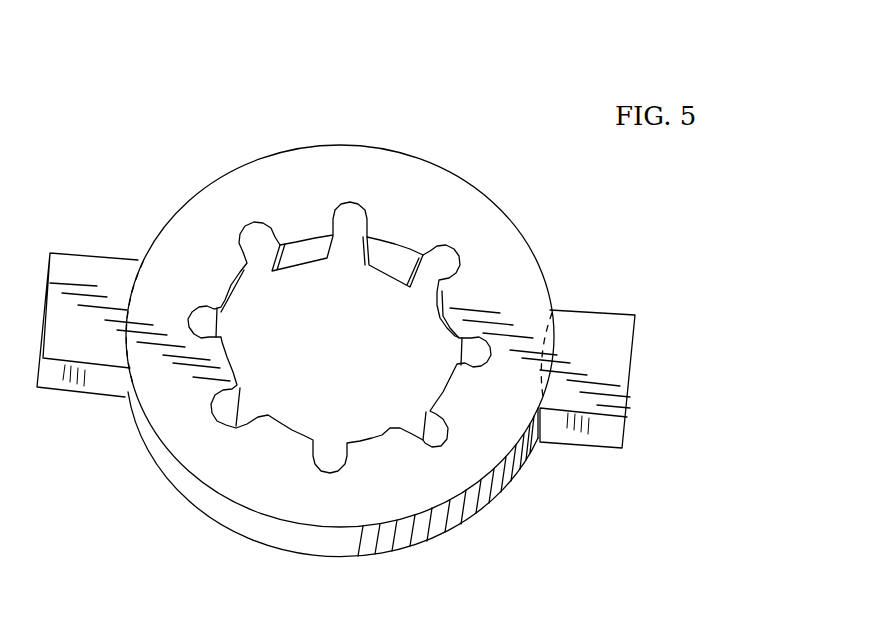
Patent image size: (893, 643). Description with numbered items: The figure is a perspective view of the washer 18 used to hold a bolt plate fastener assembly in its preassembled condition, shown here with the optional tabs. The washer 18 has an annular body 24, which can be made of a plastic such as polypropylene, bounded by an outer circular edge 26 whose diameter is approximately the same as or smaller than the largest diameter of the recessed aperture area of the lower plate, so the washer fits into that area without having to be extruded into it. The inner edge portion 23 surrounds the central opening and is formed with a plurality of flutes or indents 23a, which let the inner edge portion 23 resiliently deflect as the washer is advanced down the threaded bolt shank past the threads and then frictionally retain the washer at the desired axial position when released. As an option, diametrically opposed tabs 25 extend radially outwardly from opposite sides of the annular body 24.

The washer 18 is at (476, 86).
The inner edge portion 23 is at (284, 426).
The flutes or indents 23a is at (342, 250).
The annular body 24 is at (248, 485).
The tabs 25 is at (83, 271).
The outer circular edge 26 is at (351, 145).